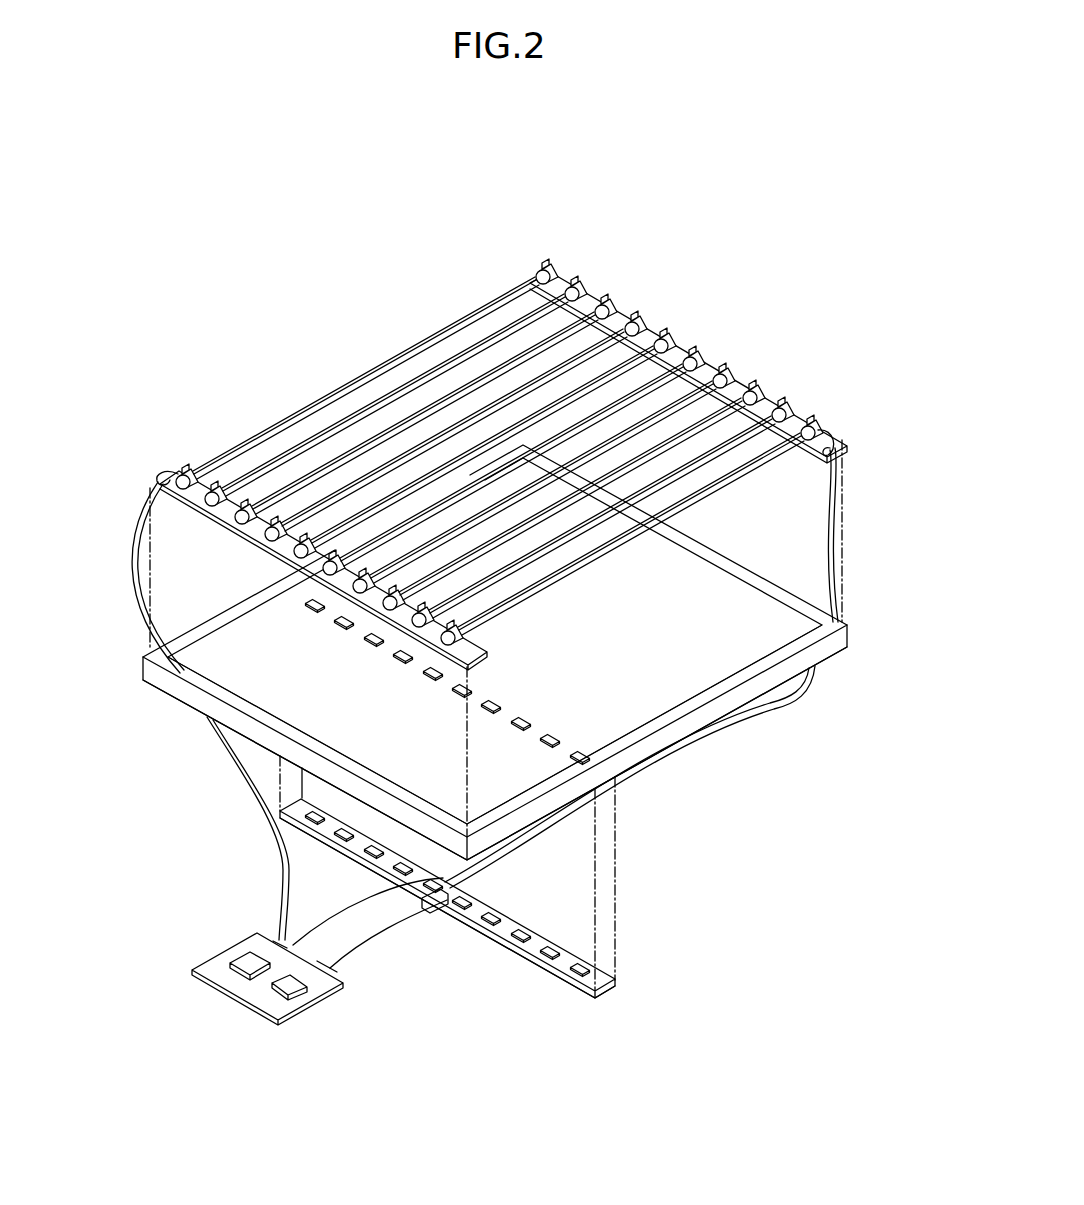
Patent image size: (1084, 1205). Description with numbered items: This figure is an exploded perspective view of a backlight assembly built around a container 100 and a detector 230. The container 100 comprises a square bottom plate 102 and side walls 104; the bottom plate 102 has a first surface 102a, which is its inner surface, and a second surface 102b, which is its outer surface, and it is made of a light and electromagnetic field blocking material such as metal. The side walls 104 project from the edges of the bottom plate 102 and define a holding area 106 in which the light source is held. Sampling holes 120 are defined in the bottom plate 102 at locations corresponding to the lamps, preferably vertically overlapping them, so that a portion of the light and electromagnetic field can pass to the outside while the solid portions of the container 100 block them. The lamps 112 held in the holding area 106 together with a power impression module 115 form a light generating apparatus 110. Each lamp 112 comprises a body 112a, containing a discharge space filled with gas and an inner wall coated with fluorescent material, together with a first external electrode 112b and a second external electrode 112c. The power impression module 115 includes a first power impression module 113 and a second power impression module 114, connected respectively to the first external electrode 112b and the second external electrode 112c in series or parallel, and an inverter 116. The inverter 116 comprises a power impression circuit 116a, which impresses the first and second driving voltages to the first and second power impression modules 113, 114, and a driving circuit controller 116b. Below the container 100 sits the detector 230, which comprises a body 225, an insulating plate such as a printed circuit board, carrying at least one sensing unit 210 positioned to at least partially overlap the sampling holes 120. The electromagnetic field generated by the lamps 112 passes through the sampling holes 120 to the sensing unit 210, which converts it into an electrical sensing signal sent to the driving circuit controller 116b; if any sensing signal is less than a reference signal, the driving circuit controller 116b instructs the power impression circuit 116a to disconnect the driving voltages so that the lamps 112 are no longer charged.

The container 100 is at (546, 715).
The bottom plate 102 is at (544, 652).
The first surface 102a is at (808, 664).
The second surface 102b is at (772, 690).
The side wall 104 is at (713, 713).
The holding area 106 is at (495, 712).
The light generating apparatus 110 is at (453, 596).
The lamp 112 is at (728, 494).
The body 112a is at (600, 548).
The first external electrode 112b is at (152, 480).
The second external electrode 112c is at (523, 273).
The first power impression module 113 is at (173, 469).
The second power impression module 114 is at (490, 274).
The power impression module 115 is at (498, 452).
The inverter 116 is at (269, 973).
The power impression circuit 116a is at (247, 960).
The driving circuit controller 116b is at (303, 990).
The sampling holes 120 is at (560, 733).
The sensing unit 210 is at (547, 940).
The body 225 is at (560, 985).
The detector 230 is at (495, 910).